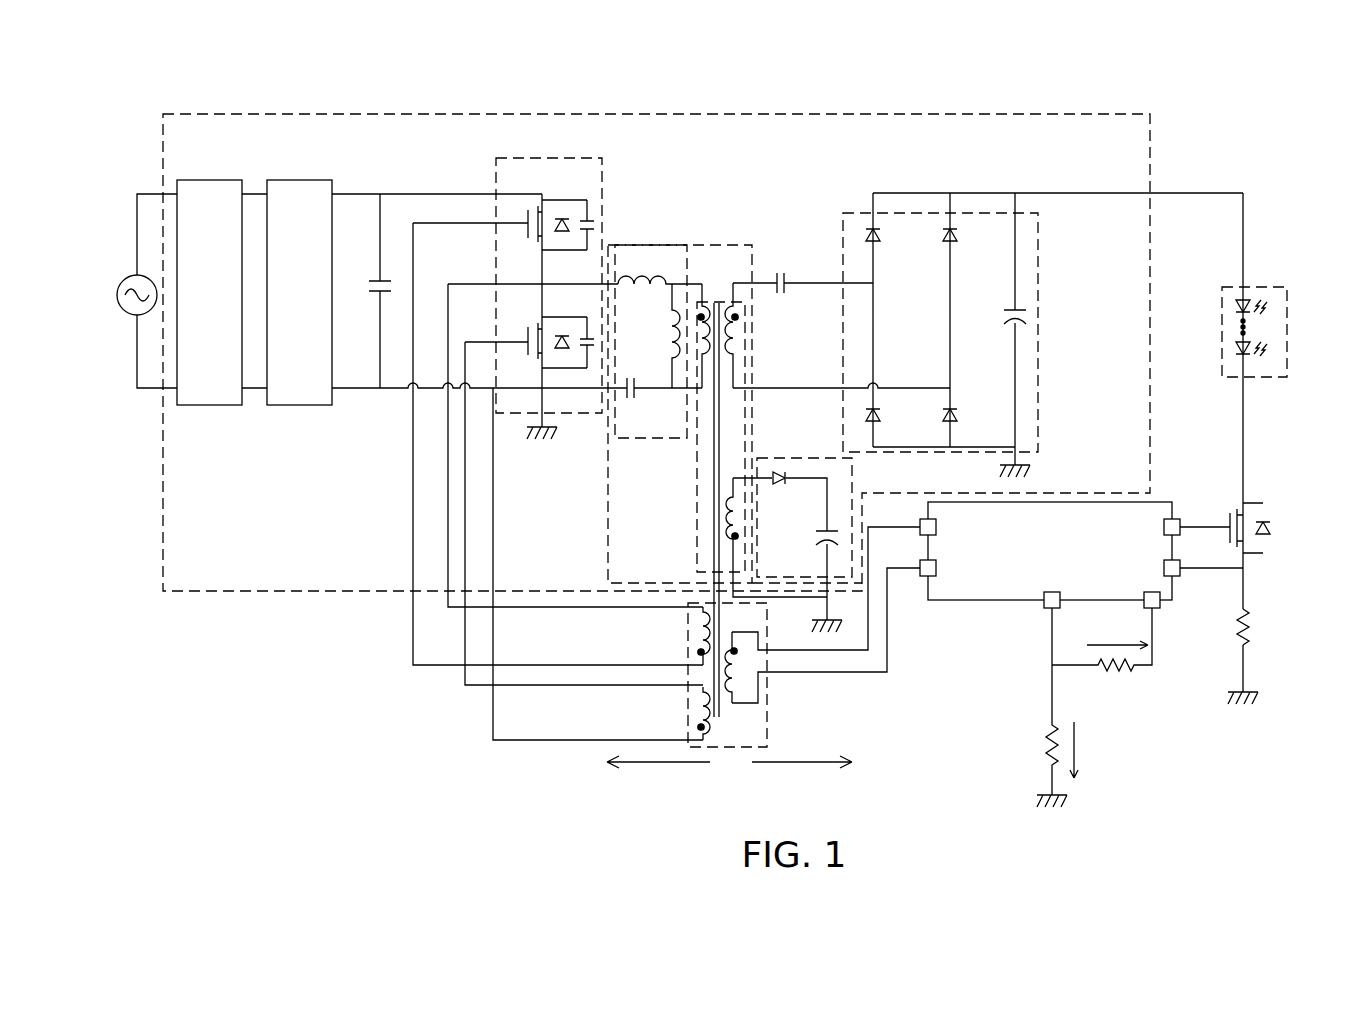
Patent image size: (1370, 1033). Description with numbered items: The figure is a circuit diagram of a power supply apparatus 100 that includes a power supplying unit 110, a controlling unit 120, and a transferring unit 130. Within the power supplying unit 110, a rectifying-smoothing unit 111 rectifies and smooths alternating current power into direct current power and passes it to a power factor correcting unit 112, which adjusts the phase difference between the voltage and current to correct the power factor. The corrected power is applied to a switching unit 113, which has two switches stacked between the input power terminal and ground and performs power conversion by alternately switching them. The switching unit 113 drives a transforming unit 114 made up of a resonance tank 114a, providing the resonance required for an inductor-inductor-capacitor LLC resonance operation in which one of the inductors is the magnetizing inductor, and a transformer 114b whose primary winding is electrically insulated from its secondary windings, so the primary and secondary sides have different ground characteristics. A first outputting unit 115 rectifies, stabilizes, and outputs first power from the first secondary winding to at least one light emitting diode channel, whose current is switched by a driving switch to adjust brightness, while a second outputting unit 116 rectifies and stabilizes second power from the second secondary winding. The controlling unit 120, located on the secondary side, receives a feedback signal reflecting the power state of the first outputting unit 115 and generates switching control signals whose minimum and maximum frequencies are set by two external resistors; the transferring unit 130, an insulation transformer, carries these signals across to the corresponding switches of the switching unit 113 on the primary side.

The power supply apparatus 100 is at (1108, 59).
The power supplying unit 110 is at (233, 591).
The rectifying-smoothing unit 111 is at (211, 405).
The power factor correcting unit 112 is at (296, 405).
The switching unit 113 is at (523, 414).
The transforming unit 114 is at (693, 245).
The resonance tank 114a is at (628, 247).
The transformer 114b is at (748, 300).
The first outputting unit 115 is at (857, 213).
The second outputting unit 116 is at (772, 458).
The controlling unit 120 is at (954, 600).
The transferring unit 130 is at (767, 705).